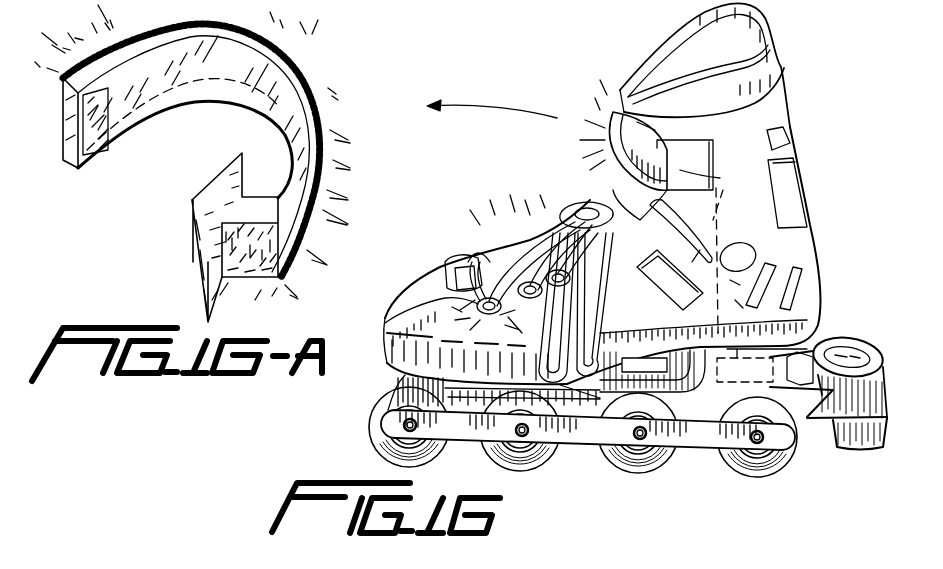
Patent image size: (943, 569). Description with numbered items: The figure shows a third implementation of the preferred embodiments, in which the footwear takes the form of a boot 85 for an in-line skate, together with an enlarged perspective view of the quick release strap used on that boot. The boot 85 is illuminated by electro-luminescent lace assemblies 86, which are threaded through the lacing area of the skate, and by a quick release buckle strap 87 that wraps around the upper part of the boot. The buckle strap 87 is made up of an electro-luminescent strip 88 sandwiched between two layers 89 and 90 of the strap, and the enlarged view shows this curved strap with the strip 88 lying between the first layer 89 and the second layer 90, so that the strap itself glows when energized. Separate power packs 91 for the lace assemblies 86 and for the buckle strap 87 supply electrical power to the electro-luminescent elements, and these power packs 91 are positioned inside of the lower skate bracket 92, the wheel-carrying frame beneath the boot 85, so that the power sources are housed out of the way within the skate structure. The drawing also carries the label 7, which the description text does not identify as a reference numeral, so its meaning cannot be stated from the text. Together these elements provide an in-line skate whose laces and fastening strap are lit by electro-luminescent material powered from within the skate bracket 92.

In FIG. 16, the boot shell 7 is at (707, 194).
In FIG. 16, the boot 85 is at (750, 210).
In FIG. 16, the electro-luminescent lace assemblies 86 is at (490, 232).
In FIG. 16-A, the quick release buckle strap 87 is at (256, 76).
In FIG. 16, the quick release buckle strap 87 is at (606, 125).
In FIG. 16-A, the electro-luminescent strip 88 is at (107, 115).
In FIG. 16-A, the layer of the strap 89 is at (50, 143).
In FIG. 16-A, the layer of the strap 90 is at (88, 160).
In FIG. 16, the power packs 91 is at (645, 362).
In FIG. 16, the lower skate bracket 92 is at (552, 428).